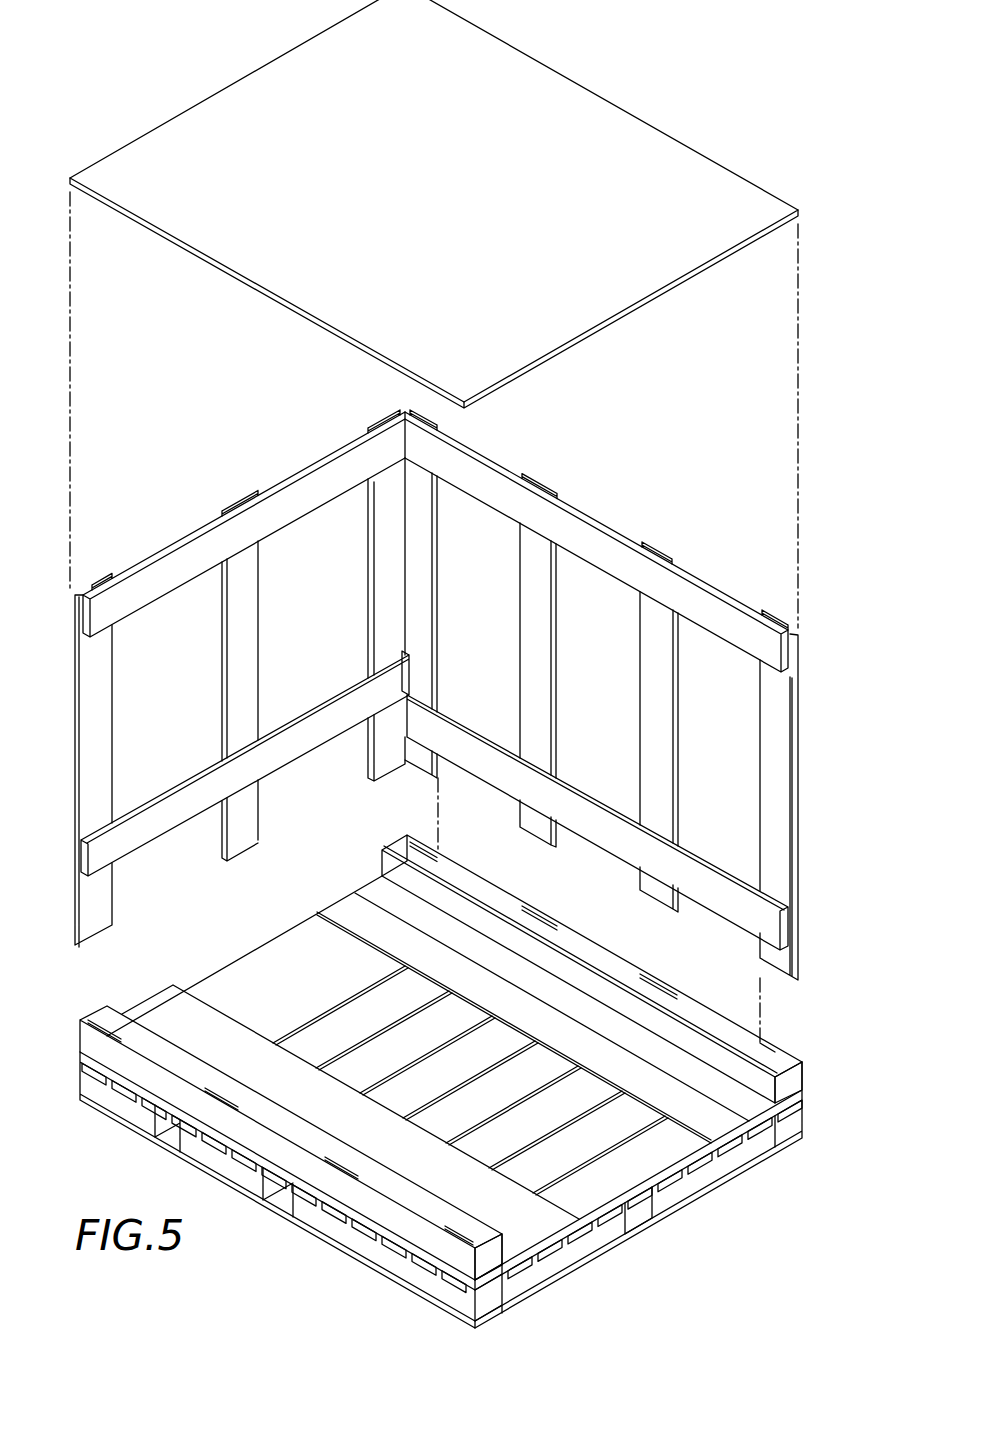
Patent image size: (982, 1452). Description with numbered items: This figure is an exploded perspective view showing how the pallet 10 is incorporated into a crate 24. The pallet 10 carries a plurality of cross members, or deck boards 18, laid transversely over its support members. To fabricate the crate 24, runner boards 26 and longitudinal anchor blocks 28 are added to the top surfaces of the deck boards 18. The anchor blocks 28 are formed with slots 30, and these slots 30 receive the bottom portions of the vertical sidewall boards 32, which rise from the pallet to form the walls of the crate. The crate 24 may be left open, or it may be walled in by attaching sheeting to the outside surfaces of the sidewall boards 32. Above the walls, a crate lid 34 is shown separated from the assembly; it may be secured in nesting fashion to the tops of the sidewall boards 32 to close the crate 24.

The pallet 10 is at (805, 1117).
The deck boards 18 is at (672, 1160).
The crate 24 is at (743, 145).
The runner boards 26 is at (672, 1105).
The longitudinal anchor blocks 28 is at (803, 1073).
The slots 30 is at (410, 838).
The vertical sidewall boards 32 is at (252, 612).
The crate lid 34 is at (597, 115).